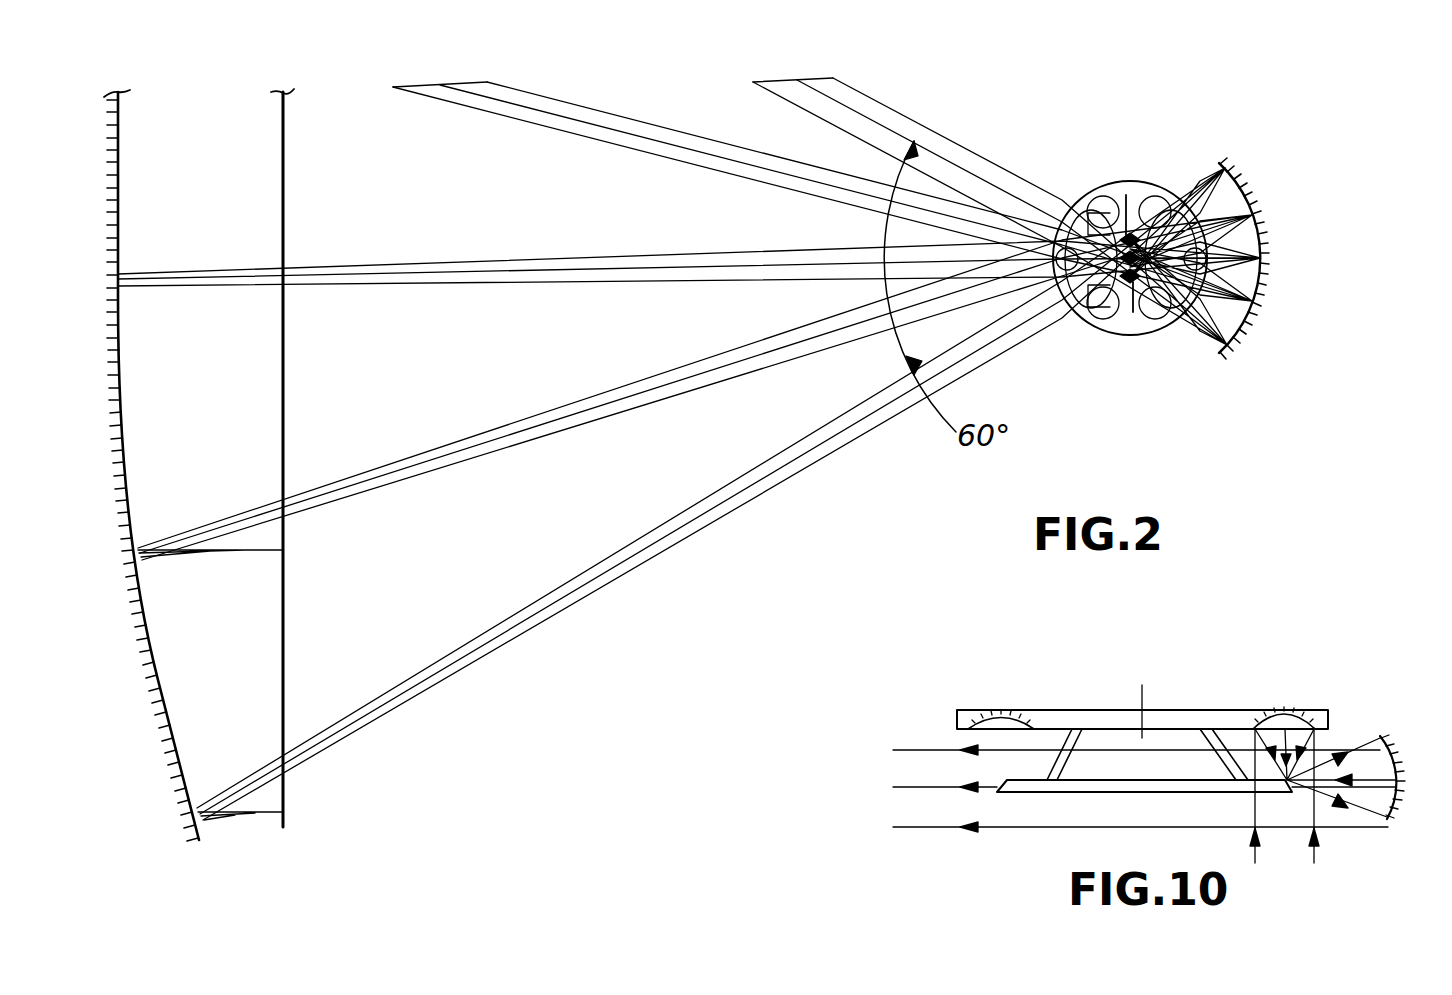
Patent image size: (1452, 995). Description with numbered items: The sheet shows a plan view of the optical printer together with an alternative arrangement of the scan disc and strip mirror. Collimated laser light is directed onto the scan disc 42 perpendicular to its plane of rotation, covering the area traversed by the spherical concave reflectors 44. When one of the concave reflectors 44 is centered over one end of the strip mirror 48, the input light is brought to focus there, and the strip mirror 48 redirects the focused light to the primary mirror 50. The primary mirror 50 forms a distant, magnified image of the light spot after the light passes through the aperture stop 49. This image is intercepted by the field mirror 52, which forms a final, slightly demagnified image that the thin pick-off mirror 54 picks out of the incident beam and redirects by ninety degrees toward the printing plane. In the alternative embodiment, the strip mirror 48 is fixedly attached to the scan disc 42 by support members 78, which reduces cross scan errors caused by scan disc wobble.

In FIG. 2, the scan disc 42 is at (1118, 335).
In FIG. 10, the scan disc 42 is at (1330, 712).
In FIG. 2, the spherical concave reflectors 44 is at (1100, 318).
In FIG. 10, the spherical concave reflectors 44 is at (1297, 714).
In FIG. 10, the strip mirror 48 is at (1290, 782).
In FIG. 2, the aperture stop 49 is at (1128, 208).
In FIG. 2, the primary mirror 50 is at (1224, 352).
In FIG. 10, the primary mirror 50 is at (1388, 821).
In FIG. 2, the field mirror 52 is at (200, 842).
In FIG. 2, the pick-off mirror 54 is at (283, 827).
In FIG. 10, the support members 78 is at (1218, 766).